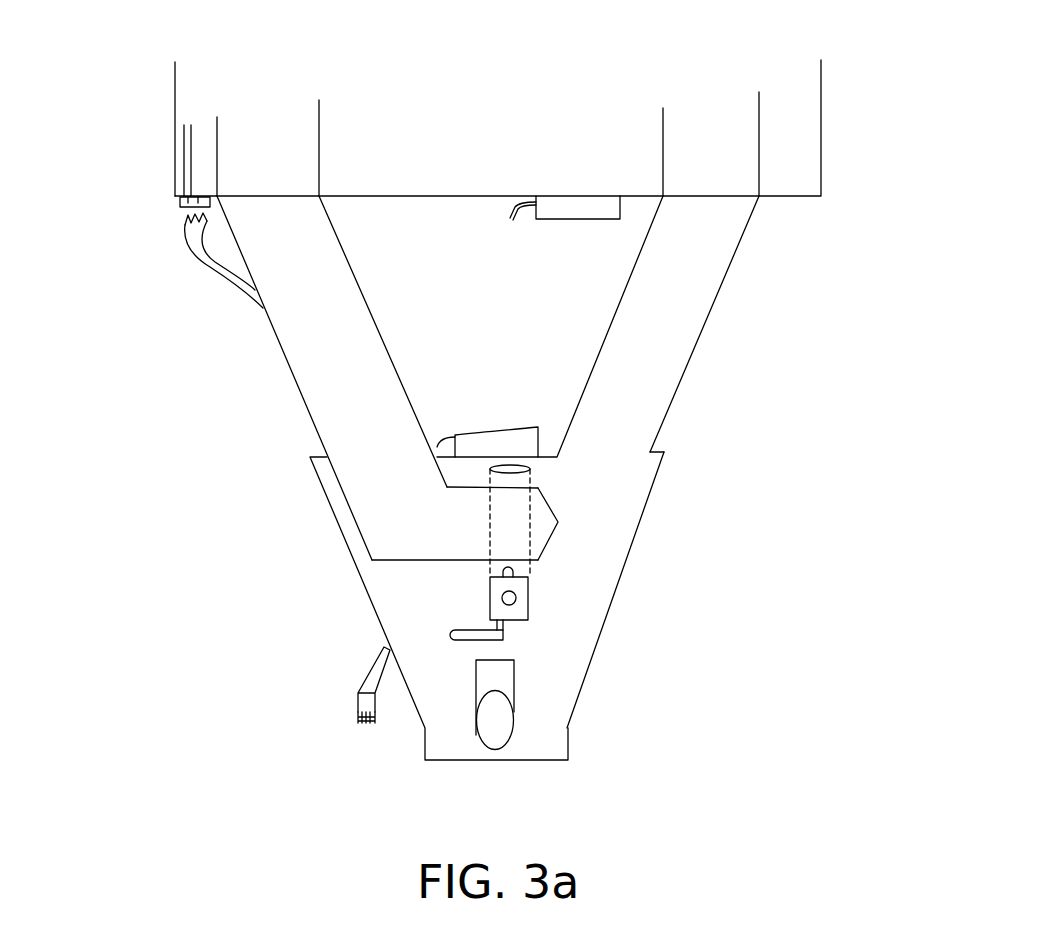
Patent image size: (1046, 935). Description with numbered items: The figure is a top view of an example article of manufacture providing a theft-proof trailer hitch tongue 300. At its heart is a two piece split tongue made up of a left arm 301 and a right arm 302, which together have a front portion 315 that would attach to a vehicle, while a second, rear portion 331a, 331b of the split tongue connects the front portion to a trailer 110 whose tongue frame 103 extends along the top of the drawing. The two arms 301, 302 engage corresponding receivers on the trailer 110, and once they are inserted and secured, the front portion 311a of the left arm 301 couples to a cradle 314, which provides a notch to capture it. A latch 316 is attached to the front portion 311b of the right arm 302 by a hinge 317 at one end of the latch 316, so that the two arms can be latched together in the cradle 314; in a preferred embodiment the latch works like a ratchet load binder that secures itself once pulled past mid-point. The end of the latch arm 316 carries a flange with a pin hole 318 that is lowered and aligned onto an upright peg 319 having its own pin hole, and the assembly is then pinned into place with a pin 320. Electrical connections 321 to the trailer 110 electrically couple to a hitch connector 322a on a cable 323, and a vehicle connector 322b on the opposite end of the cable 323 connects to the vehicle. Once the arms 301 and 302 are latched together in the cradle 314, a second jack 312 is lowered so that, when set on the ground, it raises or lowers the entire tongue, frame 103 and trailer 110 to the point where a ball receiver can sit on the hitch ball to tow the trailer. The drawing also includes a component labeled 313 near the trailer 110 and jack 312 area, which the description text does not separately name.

The theft-proof trailer hitch tongue 300 is at (151, 86).
The tongue frame 103 is at (175, 91).
The trailer 110 is at (425, 196).
The rear portion 331a is at (267, 148).
The rear portion 331b is at (712, 123).
The electrical connections 321 is at (180, 201).
The hitch connector 322a is at (185, 220).
The left arm 301 is at (337, 400).
The right arm 302 is at (687, 368).
The sensor module 313 is at (579, 210).
The second jack 312 is at (496, 435).
The hinge 317 is at (530, 468).
The latch 316 is at (490, 503).
The front portion of the left arm 311a is at (560, 522).
The front portion of the right arm 311b is at (575, 630).
The cradle 314 is at (503, 545).
The pin hole 318 is at (517, 572).
The upright peg 319 is at (490, 597).
The pin 320 is at (497, 630).
The cable 323 is at (383, 665).
The vehicle connector 322b is at (358, 717).
The front portion 315 is at (514, 710).